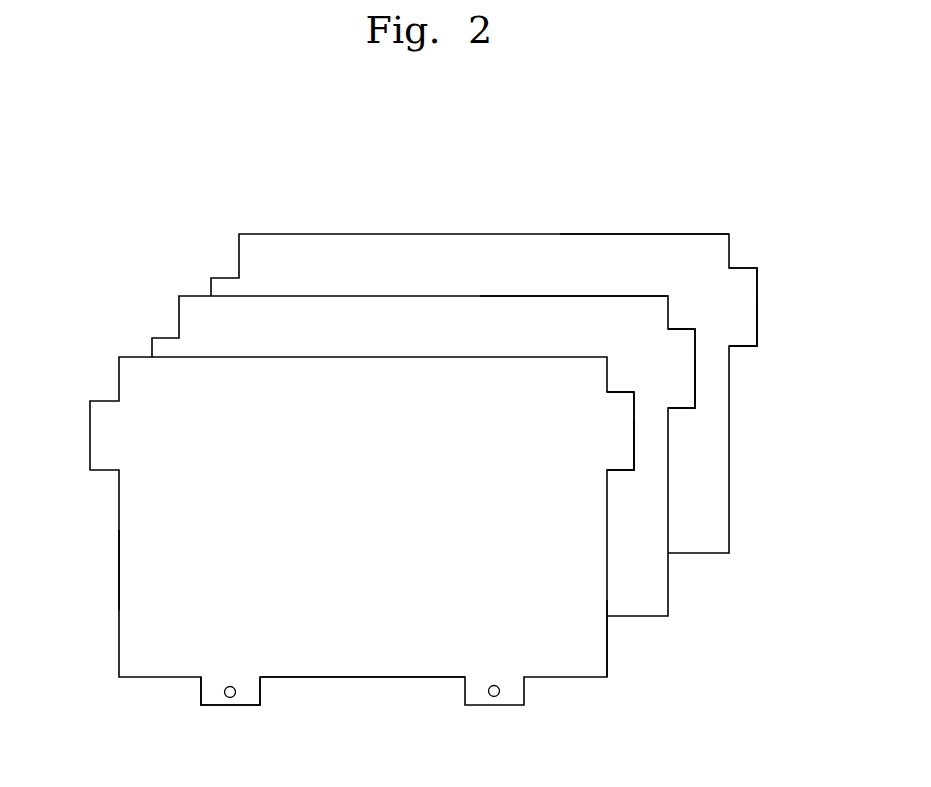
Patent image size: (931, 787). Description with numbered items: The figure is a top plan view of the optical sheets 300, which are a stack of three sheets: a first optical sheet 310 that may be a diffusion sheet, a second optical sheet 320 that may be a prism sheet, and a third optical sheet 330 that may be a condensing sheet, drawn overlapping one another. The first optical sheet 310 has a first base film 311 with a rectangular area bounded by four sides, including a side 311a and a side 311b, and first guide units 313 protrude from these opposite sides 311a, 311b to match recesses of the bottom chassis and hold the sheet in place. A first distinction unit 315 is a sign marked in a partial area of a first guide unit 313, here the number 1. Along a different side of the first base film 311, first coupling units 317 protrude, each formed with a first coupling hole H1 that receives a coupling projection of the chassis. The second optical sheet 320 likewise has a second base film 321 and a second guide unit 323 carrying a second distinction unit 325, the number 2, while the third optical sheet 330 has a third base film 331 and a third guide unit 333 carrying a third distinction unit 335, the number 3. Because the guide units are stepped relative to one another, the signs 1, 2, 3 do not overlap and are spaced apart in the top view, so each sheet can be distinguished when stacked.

The optical sheets 300 is at (522, 171).
The first optical sheet 310 is at (341, 354).
The second optical sheet 320 is at (416, 293).
The third optical sheet 330 is at (493, 231).
The first base film 311 is at (363, 653).
The side of first base film 311a is at (607, 648).
The side of first base film 311b is at (118, 568).
The first guide unit 313 is at (634, 433).
The first distinction unit 315 is at (624, 391).
The first coupling unit 317 is at (243, 705).
The second base film 321 is at (559, 307).
The second guide unit 323 is at (695, 385).
The second distinction unit 325 is at (682, 353).
The third base film 331 is at (642, 245).
The third guide unit 333 is at (757, 290).
The third distinction unit 335 is at (743, 318).
The first coupling hole H1 is at (230, 698).
The first sign 1 is at (620, 403).
The second sign 2 is at (681, 353).
The third sign 3 is at (743, 334).